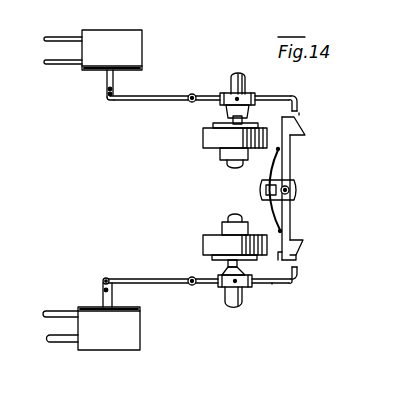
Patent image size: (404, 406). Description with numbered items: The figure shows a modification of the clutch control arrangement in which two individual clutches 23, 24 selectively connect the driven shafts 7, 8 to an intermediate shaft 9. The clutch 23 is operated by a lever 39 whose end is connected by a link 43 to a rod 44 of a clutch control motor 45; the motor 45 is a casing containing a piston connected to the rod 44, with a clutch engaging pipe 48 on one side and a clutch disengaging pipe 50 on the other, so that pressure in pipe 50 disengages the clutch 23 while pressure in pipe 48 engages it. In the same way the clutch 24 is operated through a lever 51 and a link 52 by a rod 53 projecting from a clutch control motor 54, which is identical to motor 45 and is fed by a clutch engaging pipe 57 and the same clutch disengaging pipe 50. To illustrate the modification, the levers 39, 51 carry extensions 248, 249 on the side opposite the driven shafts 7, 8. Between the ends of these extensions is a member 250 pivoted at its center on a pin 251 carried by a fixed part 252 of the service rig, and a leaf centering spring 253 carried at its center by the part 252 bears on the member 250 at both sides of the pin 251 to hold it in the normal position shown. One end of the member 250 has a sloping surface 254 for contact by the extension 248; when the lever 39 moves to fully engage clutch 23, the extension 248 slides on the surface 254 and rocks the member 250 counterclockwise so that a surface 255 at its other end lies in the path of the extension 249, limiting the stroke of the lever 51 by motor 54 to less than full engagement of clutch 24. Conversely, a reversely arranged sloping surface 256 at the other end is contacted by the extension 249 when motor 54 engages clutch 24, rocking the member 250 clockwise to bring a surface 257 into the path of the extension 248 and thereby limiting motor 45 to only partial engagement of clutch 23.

The shaft 7 is at (233, 84).
The shaft 8 is at (233, 305).
The intermediate shaft 9 is at (230, 163).
The clutch 23 is at (201, 137).
The clutch 24 is at (201, 243).
The lever 39 is at (154, 99).
The link 43 is at (108, 96).
The rod 44 is at (107, 78).
The clutch control motor 45 is at (144, 45).
The clutch engaging pipe 48 is at (60, 64).
The clutch disengaging pipe 50 is at (58, 30).
The lever 51 is at (140, 281).
The link 52 is at (103, 280).
The rod 53 is at (103, 295).
The clutch control motor 54 is at (143, 337).
The clutch engaging pipe 57 is at (50, 311).
The extension 248 is at (272, 97).
The extension 249 is at (273, 284).
The member 250 is at (291, 160).
The pin 251 is at (292, 189).
The fixed part 252 is at (261, 196).
The leaf centering spring 253 is at (272, 169).
The sloping surface 254 is at (305, 124).
The surface 255 is at (291, 262).
The sloping surface 256 is at (300, 250).
The surface 257 is at (300, 115).